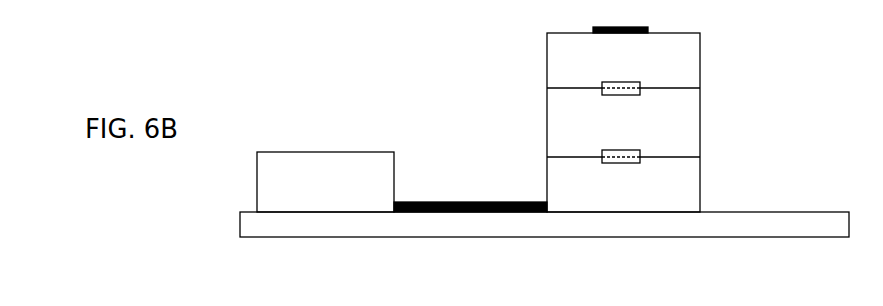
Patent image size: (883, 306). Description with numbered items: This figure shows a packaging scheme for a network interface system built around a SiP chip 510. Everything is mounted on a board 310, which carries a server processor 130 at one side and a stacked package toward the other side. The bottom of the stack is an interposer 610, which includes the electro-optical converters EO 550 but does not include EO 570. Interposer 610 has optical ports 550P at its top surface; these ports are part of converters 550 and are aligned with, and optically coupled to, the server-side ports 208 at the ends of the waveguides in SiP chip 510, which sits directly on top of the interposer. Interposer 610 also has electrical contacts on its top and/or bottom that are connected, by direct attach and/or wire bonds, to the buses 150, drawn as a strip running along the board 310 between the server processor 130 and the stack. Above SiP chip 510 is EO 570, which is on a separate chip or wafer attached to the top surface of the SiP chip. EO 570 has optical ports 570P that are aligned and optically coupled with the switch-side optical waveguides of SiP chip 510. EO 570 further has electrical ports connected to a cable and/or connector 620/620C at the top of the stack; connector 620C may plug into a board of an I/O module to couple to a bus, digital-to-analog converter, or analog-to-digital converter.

The server processor 130 is at (325, 182).
The buses 150 is at (470, 195).
The server-side ports 208 is at (599, 97).
The board 310 is at (544, 224).
The SiP chip 510 is at (623, 122).
The EO 550 is at (623, 184).
The optical ports 550P is at (644, 163).
The EO 570 is at (623, 53).
The optical ports 570P is at (644, 83).
The interposer 610 is at (700, 195).
The cable and/or connector 620 is at (622, 20).
The connector 620C is at (620, 30).